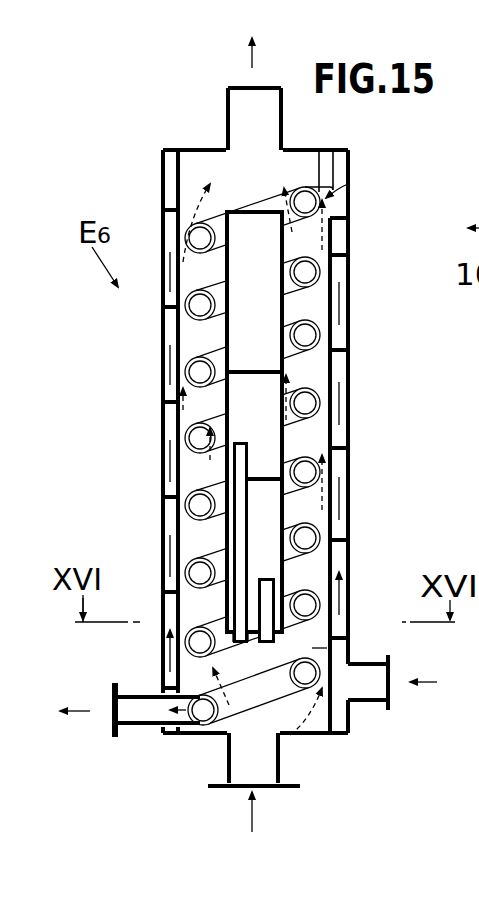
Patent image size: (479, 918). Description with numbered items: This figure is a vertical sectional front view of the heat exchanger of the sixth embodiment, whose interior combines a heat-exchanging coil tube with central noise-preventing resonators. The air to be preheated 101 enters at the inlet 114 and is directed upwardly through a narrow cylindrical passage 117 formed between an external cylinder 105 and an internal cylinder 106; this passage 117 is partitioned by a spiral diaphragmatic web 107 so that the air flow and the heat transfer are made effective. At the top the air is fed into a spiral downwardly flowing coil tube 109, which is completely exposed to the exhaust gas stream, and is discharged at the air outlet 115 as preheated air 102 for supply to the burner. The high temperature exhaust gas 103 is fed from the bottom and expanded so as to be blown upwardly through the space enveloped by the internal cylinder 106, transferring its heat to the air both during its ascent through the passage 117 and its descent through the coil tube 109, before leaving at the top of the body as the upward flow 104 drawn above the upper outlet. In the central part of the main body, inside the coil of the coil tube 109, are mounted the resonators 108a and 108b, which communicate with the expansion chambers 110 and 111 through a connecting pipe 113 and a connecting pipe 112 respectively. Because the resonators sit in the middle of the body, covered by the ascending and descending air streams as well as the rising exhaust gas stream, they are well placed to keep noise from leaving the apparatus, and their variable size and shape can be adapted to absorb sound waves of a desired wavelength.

The air to be preheated 101 is at (437, 682).
The preheated air 102 is at (68, 733).
The high temperature exhaust gas 103 is at (256, 812).
The top outlet flow 104 is at (250, 54).
The external cylinder 105 is at (348, 272).
The internal cylinder 106 is at (346, 463).
The spiral diaphragmatic web 107 is at (170, 496).
The resonator 108a is at (256, 530).
The resonator 108b is at (250, 400).
The coil tube 109 is at (320, 332).
The expansion chamber 110 is at (318, 722).
The expansion chamber 111 is at (315, 648).
The connecting pipe 112 is at (246, 590).
The connecting pipe 113 is at (276, 582).
The inlet 114 is at (360, 705).
The air outlet 115 is at (130, 728).
The narrow cylindrical passage 117 is at (228, 106).